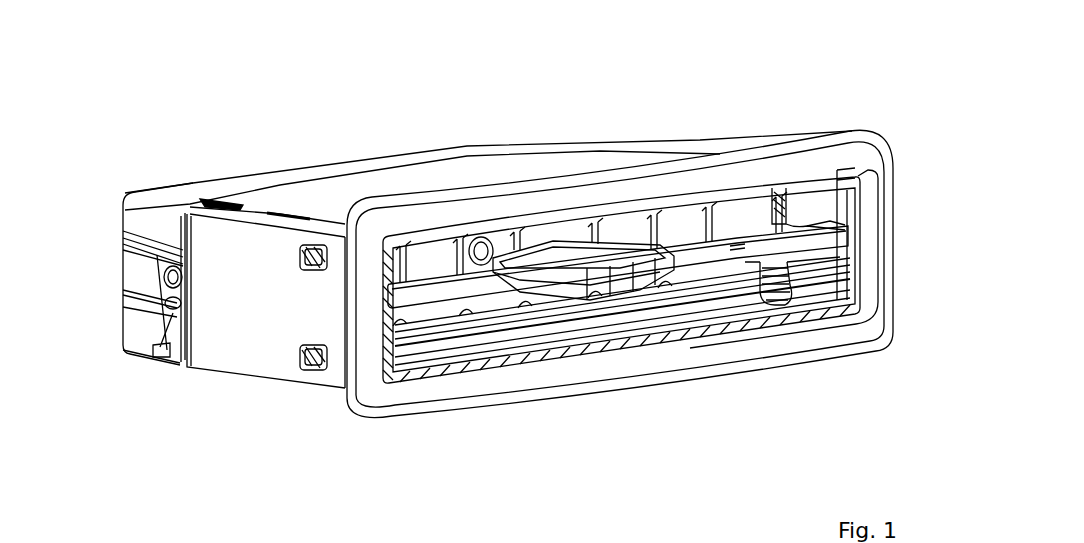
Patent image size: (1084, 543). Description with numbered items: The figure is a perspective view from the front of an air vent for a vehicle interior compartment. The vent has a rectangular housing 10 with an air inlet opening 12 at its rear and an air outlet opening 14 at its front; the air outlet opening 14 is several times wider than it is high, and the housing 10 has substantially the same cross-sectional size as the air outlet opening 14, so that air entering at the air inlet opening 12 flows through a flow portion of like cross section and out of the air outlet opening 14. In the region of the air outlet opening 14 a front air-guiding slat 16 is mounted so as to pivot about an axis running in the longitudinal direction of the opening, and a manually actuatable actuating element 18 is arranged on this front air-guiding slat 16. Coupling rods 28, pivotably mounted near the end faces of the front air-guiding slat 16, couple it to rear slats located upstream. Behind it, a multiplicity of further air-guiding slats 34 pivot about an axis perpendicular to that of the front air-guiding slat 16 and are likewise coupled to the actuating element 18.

The housing 10 is at (313, 197).
The air inlet opening 12 is at (153, 230).
The air outlet opening 14 is at (837, 211).
The front air-guiding slat 16 is at (737, 257).
The actuating element 18 is at (622, 278).
The coupling rods 28 is at (780, 218).
The further air-guiding slats 34 is at (625, 233).